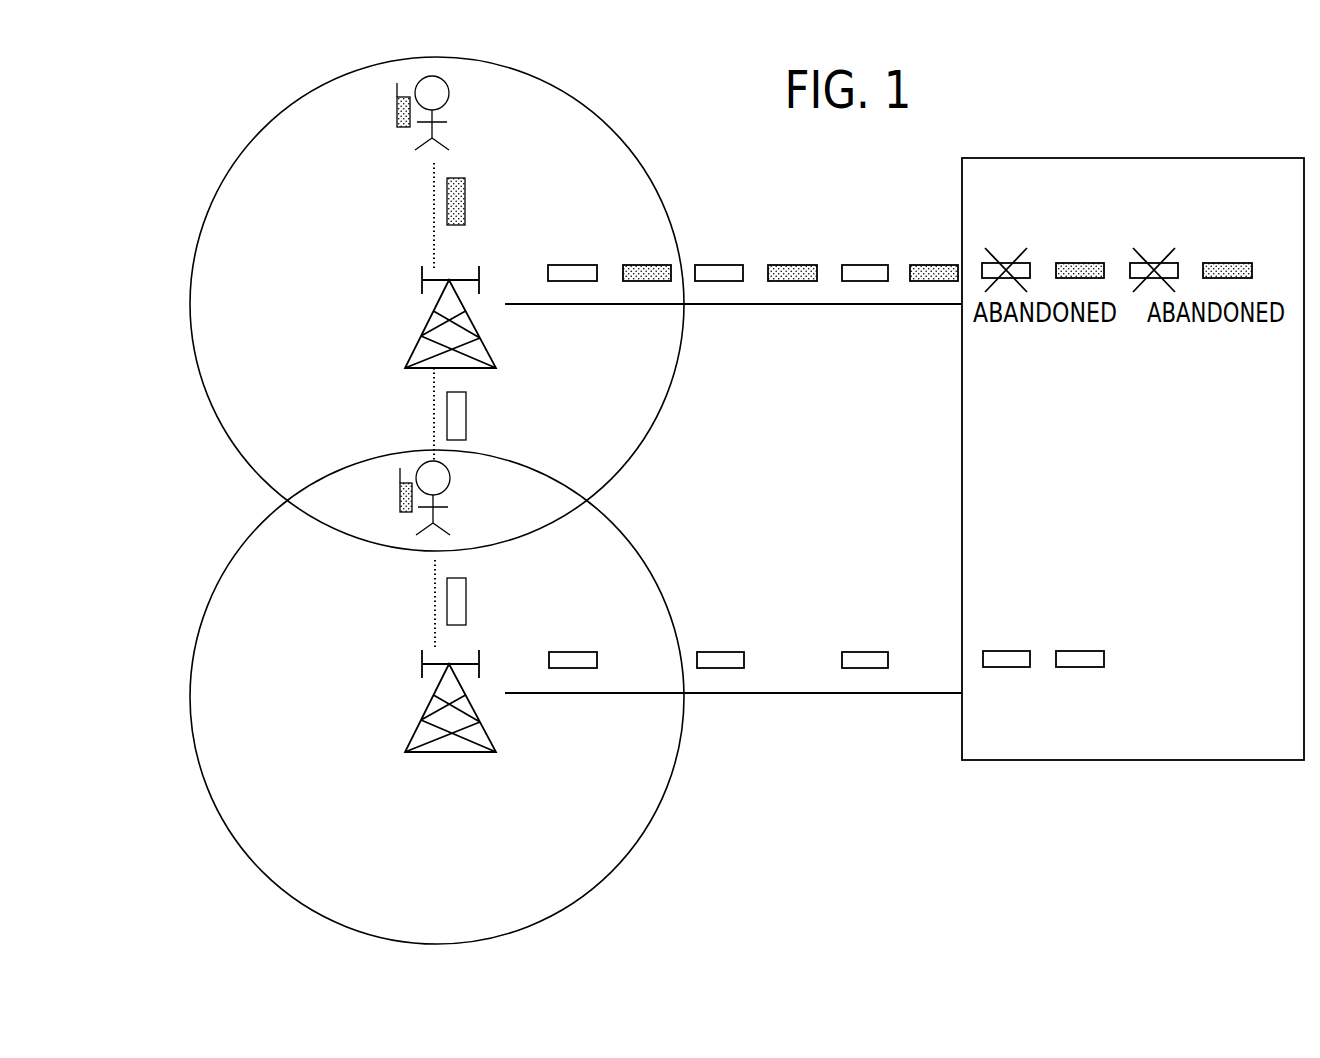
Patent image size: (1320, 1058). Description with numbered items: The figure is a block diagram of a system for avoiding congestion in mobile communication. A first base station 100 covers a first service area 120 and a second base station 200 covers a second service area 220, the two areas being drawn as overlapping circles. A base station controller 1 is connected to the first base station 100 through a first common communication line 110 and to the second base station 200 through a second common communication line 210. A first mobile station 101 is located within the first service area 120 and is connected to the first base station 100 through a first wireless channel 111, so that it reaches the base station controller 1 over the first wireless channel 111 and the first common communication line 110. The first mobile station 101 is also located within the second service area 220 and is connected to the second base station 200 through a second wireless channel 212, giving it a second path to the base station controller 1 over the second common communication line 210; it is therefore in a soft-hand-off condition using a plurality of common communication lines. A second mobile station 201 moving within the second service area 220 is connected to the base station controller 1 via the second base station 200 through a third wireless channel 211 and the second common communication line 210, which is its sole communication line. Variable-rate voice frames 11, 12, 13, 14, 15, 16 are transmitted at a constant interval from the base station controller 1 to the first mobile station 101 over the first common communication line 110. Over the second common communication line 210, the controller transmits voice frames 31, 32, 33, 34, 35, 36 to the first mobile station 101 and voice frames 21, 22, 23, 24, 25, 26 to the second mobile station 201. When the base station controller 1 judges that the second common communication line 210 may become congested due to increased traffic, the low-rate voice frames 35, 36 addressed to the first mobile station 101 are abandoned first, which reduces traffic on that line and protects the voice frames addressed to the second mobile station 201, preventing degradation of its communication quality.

The base station controller 1 is at (1017, 158).
The second service area 220 is at (225, 433).
The first service area 120 is at (242, 847).
The second mobile station 201 is at (397, 107).
The first mobile station 101 is at (398, 497).
The voice frame 21 is at (465, 195).
The voice frame 31 is at (466, 408).
The voice frame 11 is at (466, 592).
The third wireless channel 211 is at (428, 233).
The second wireless channel 212 is at (428, 408).
The first wireless channel 111 is at (433, 607).
The second base station 200 is at (430, 325).
The first base station 100 is at (430, 710).
The second common communication line 210 is at (768, 305).
The first common communication line 110 is at (767, 694).
The voice frame 32 is at (575, 263).
The voice frame 22 is at (655, 263).
The voice frame 33 is at (727, 263).
The voice frame 23 is at (787, 263).
The voice frame 34 is at (867, 263).
The voice frame 24 is at (938, 263).
The low-rate voice frame 35 is at (1005, 263).
The voice frame 25 is at (1085, 263).
The low-rate voice frame 36 is at (1153, 263).
The voice frame 26 is at (1232, 263).
The voice frame 12 is at (570, 650).
The voice frame 13 is at (712, 650).
The voice frame 14 is at (857, 650).
The voice frame 15 is at (1000, 649).
The voice frame 16 is at (1075, 649).